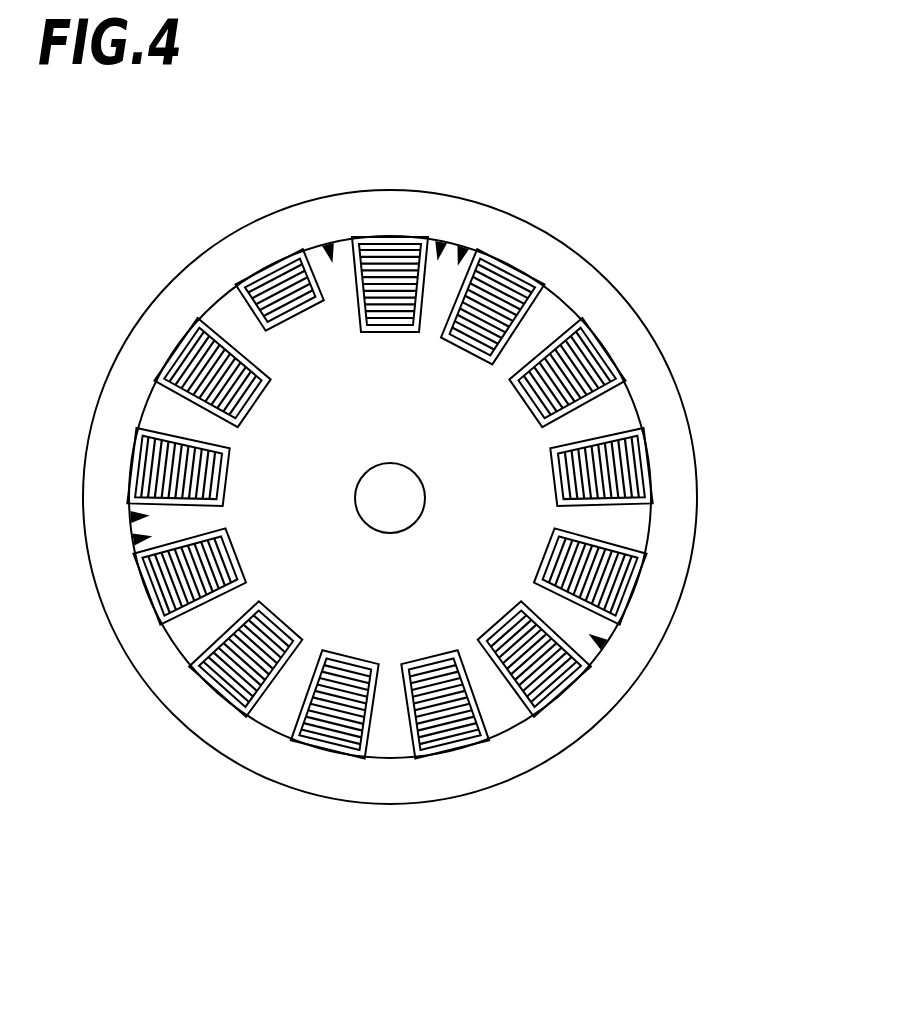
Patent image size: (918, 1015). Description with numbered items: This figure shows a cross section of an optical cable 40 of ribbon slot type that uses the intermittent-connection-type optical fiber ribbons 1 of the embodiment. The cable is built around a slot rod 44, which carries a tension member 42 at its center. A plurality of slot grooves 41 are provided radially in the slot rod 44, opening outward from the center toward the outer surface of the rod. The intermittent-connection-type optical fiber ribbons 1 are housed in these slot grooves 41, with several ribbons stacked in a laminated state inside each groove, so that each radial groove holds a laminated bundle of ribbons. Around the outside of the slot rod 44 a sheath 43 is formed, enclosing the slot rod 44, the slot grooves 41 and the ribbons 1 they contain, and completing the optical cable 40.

The intermittent-connection-type optical fiber ribbon 1 is at (389, 445).
The optical cable 40 is at (436, 484).
The slot groove 41 is at (385, 245).
The tension member 42 is at (403, 503).
The sheath 43 is at (655, 603).
The slot rod 44 is at (448, 619).